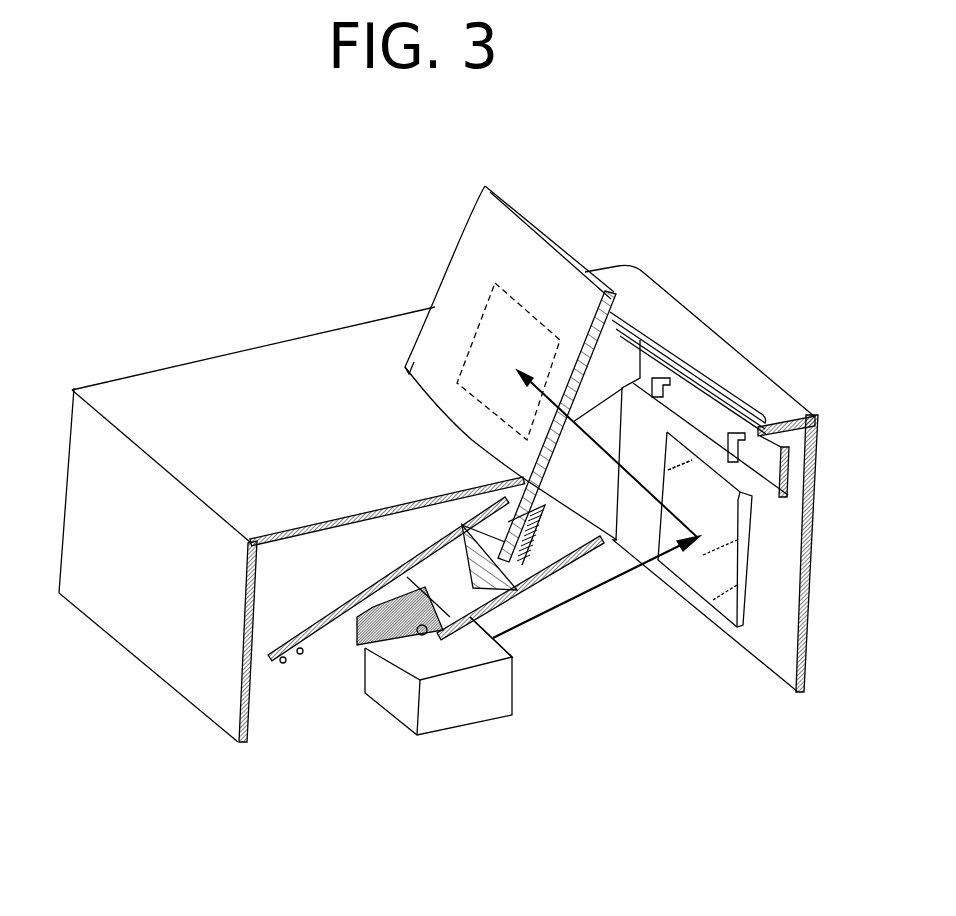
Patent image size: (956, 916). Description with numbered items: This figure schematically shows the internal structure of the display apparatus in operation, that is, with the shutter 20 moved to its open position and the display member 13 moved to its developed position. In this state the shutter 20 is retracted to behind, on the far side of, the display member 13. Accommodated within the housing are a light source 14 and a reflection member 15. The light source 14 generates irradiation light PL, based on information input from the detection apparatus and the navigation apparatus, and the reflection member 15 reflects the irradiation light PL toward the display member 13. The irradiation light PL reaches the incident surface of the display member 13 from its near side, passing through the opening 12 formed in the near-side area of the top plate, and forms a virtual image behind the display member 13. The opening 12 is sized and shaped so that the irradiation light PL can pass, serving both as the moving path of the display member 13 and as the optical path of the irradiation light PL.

The opening 12 is at (653, 428).
The display member 13 is at (527, 220).
The light source 14 is at (474, 723).
The reflection member 15 is at (712, 582).
The shutter 20 is at (315, 570).
The irradiation light PL is at (571, 602).